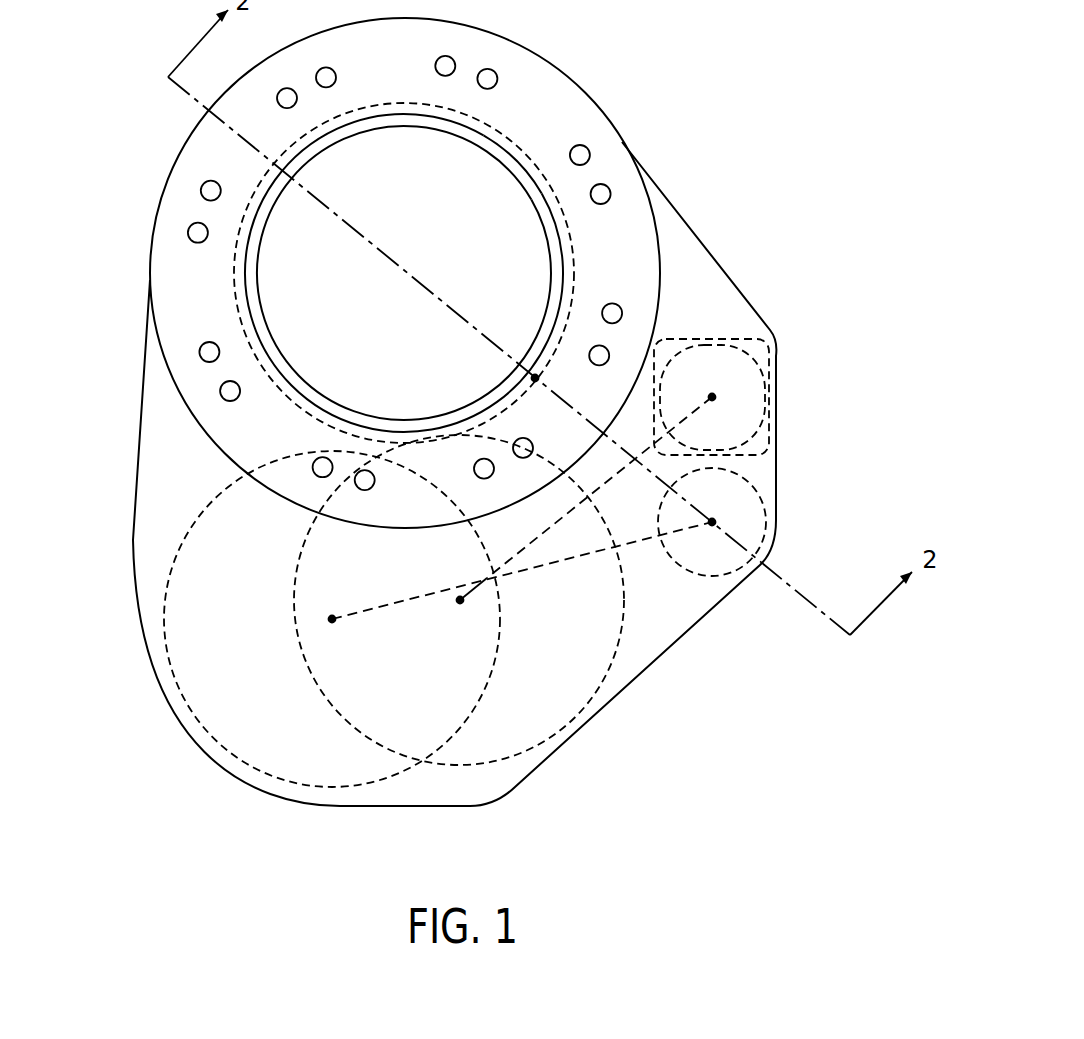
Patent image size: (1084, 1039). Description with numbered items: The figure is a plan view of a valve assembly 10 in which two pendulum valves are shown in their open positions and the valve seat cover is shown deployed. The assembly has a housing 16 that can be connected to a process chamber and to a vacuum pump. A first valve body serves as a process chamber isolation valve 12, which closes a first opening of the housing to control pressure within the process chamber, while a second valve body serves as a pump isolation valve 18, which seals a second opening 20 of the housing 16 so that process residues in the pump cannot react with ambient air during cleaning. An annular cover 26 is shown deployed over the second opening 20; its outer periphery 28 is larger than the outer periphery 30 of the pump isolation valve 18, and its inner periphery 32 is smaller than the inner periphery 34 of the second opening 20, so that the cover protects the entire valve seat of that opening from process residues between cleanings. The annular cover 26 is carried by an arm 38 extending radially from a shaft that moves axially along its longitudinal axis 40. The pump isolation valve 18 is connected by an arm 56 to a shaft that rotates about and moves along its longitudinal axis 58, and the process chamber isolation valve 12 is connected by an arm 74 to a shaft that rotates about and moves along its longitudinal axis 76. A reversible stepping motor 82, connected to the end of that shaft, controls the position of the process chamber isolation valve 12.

The valve assembly 10 is at (745, 108).
The process chamber isolation valve 12 is at (467, 768).
The housing 16 is at (737, 277).
The pump isolation valve 18 is at (230, 753).
The second opening 20 is at (490, 147).
The annular cover 26 is at (547, 235).
The outer periphery of the annular cover 28 is at (580, 242).
The outer periphery of the pump isolation valve 30 is at (278, 782).
The inner periphery of the annular cover 32 is at (520, 183).
The inner periphery of the second opening 34 is at (518, 153).
The arm 38 is at (568, 402).
The longitudinal axis 40 is at (712, 522).
The arm 56 is at (405, 600).
The longitudinal axis 58 is at (712, 522).
The arm 74 is at (552, 528).
The longitudinal axis 76 is at (712, 397).
The motor 82 is at (745, 338).